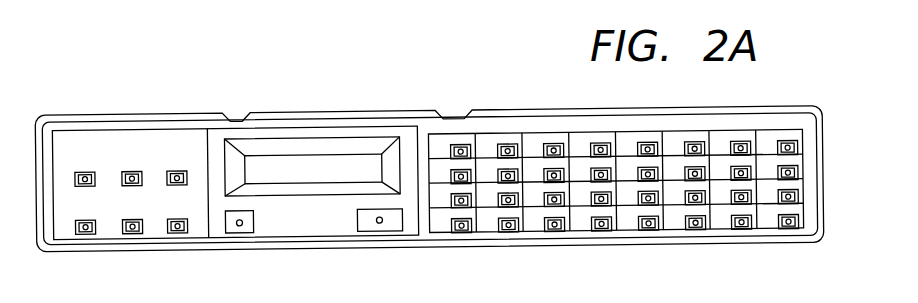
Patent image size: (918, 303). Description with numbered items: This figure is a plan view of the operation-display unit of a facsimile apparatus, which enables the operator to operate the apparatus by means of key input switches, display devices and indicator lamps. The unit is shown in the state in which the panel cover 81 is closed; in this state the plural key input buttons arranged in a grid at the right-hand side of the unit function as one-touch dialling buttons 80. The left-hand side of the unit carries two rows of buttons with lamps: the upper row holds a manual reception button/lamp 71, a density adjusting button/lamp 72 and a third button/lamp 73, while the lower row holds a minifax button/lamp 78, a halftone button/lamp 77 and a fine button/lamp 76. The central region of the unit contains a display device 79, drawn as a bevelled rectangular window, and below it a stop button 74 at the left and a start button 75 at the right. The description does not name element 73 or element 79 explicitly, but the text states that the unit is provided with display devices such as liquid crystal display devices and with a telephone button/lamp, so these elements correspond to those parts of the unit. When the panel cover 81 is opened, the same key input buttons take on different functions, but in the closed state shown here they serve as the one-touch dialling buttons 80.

The manual reception button/lamp 71 is at (89, 170).
The density adjusting button/lamp 72 is at (131, 170).
The operation key 73 is at (177, 170).
The stop button 74 is at (240, 226).
The start button 75 is at (379, 225).
The fine button/lamp 76 is at (177, 231).
The halftone button/lamp 77 is at (130, 231).
The minifax button/lamp 78 is at (85, 231).
The display 79 is at (360, 160).
The one-touch dialling buttons 80 is at (492, 220).
The panel cover 81 is at (807, 225).